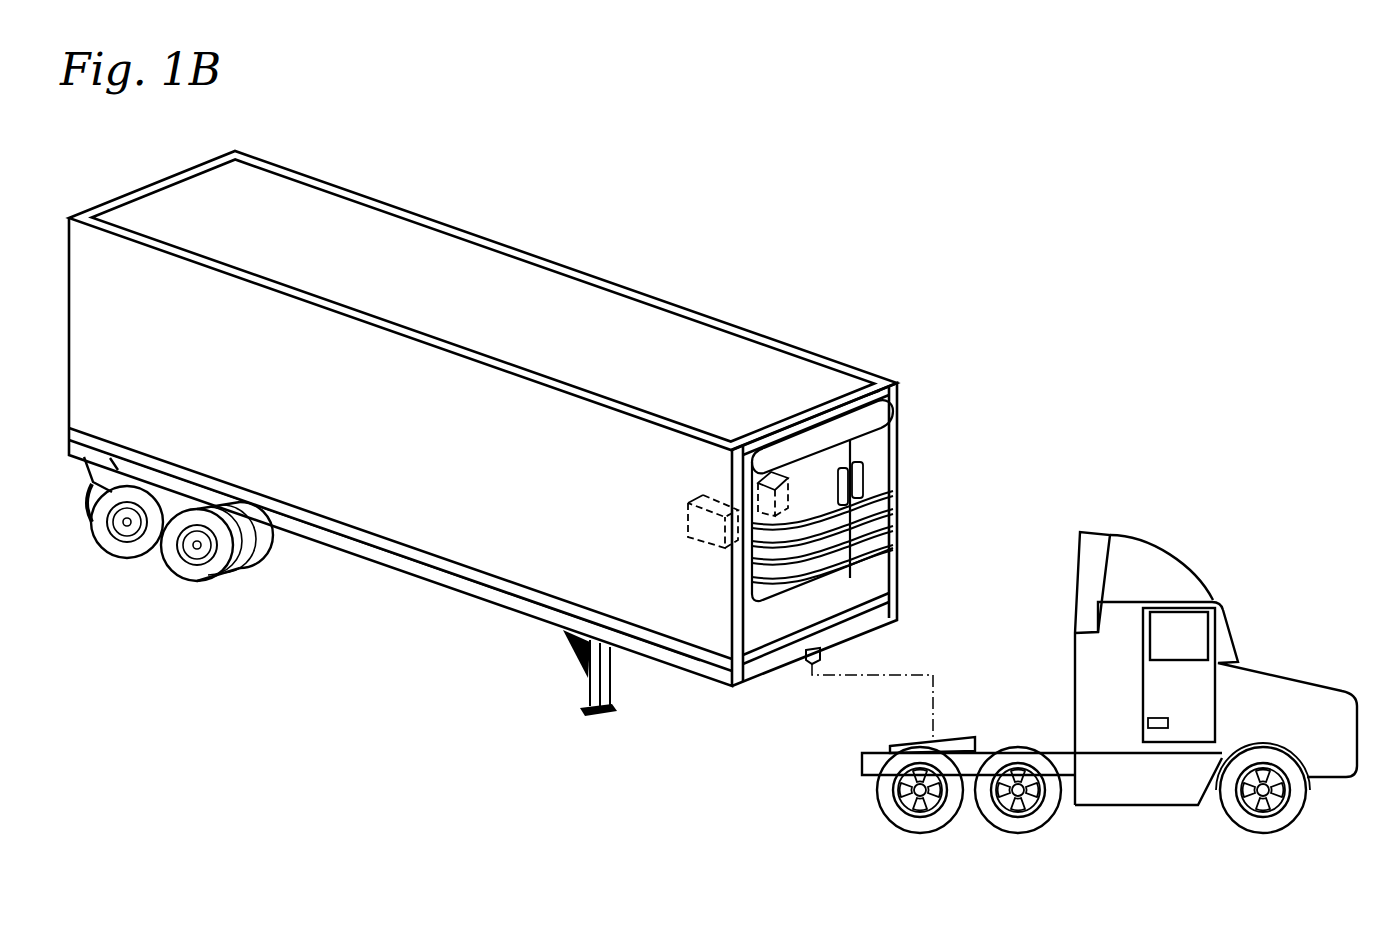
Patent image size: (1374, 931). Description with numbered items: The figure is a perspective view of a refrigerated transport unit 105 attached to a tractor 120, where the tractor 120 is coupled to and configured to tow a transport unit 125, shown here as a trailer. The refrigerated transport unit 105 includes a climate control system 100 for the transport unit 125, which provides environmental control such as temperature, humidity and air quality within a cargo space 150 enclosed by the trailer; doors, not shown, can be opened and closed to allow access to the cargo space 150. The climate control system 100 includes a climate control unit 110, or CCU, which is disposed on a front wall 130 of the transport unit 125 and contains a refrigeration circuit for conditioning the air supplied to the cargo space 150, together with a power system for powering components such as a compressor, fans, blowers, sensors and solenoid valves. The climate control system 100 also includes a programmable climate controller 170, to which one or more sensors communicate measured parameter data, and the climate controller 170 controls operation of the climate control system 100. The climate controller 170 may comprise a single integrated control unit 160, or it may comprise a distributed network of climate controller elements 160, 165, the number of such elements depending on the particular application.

The climate control system 100 is at (938, 293).
The refrigerated transport unit 105 is at (498, 203).
The climate control unit 110 is at (878, 452).
The tractor 120 is at (1280, 673).
The transport unit 125 is at (620, 285).
The front wall 130 is at (873, 398).
The cargo space 150 is at (425, 478).
The integrated control unit 160 is at (765, 520).
The climate controller element 165 is at (583, 652).
The climate controller 170 is at (690, 537).